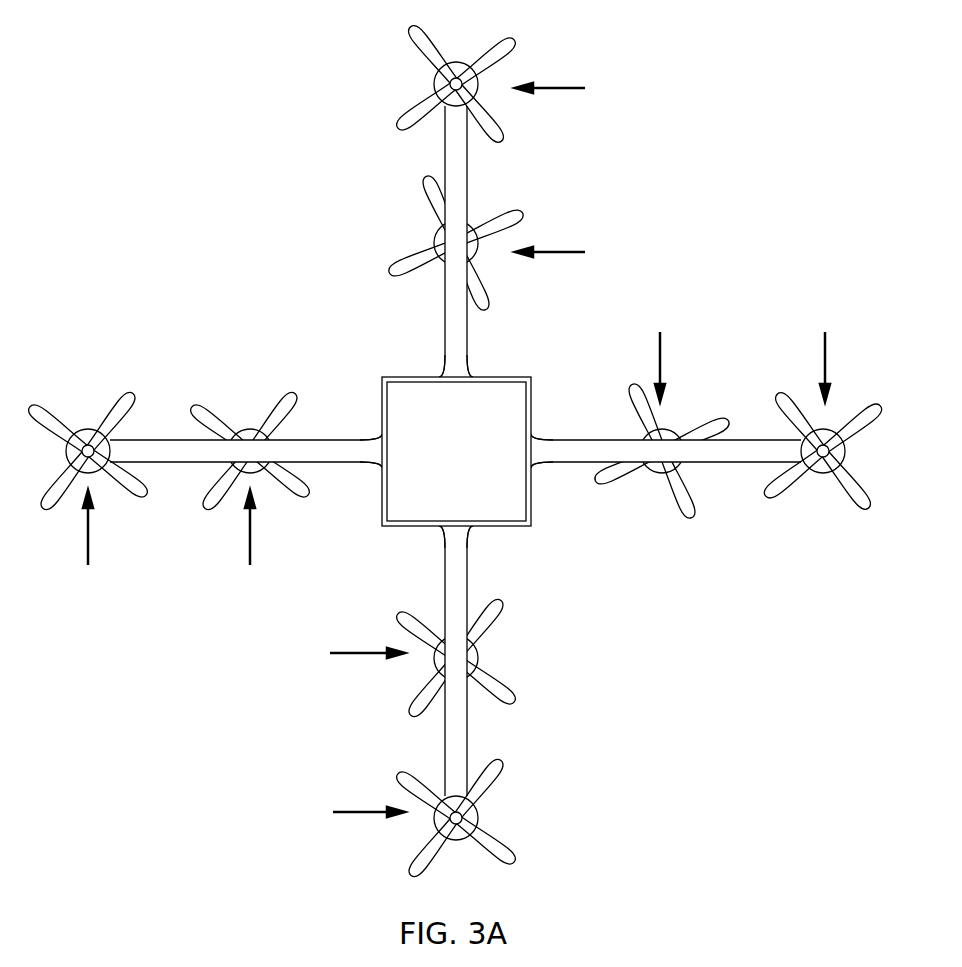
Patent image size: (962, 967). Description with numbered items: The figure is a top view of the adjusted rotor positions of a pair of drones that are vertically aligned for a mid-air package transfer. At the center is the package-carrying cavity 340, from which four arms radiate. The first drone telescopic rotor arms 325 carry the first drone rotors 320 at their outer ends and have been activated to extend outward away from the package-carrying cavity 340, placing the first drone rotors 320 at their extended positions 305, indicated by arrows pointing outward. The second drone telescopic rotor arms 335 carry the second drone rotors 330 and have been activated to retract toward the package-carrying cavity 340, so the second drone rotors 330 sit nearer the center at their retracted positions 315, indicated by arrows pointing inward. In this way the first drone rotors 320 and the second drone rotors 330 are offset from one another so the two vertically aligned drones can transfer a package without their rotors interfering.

The extended positions 305 is at (582, 88).
The retracted positions 315 is at (583, 252).
The first drone rotors 320 is at (412, 30).
The first drone telescopic rotor arms 325 is at (468, 172).
The second drone rotors 330 is at (430, 188).
The second drone telescopic rotor arms 335 is at (445, 322).
The package-carrying cavity 340 is at (520, 377).